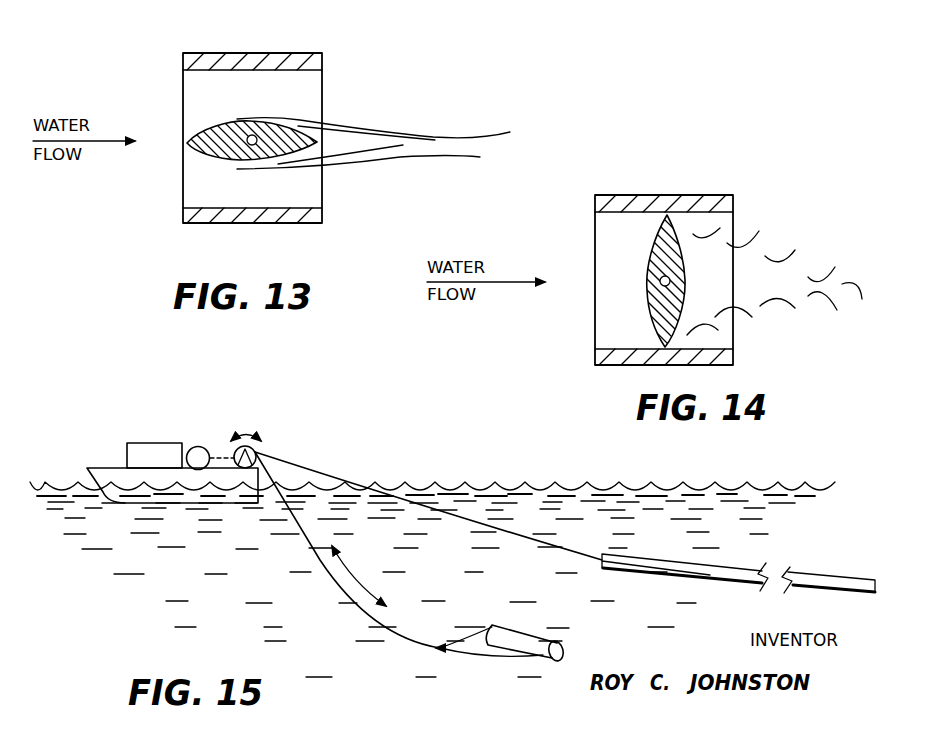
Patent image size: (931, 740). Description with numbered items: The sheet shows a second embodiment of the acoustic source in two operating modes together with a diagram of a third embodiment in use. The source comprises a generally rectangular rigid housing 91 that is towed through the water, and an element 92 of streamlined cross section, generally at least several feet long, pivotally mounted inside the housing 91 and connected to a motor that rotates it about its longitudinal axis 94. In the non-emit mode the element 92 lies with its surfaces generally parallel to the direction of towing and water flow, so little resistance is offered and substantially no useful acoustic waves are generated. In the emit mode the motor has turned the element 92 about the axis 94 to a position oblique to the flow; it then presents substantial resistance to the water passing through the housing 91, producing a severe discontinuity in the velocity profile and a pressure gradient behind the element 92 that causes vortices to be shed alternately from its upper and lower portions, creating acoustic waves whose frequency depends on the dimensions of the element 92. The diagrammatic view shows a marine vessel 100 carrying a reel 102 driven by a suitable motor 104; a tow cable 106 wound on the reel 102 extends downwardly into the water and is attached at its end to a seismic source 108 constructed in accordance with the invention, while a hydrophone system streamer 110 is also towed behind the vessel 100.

In FIG. 13, the housing 91 is at (252, 58).
In FIG. 14, the housing 91 is at (665, 205).
In FIG. 13, the element 92 is at (265, 128).
In FIG. 14, the element 92 is at (660, 235).
In FIG. 13, the longitudinal axis 94 is at (248, 143).
In FIG. 14, the longitudinal axis 94 is at (660, 278).
In FIG. 15, the marine vessel 100 is at (125, 480).
In FIG. 15, the reel 102 is at (255, 452).
In FIG. 15, the motor 104 is at (197, 447).
In FIG. 15, the tow cable 106 is at (362, 603).
In FIG. 15, the seismic source 108 is at (508, 634).
In FIG. 15, the hydrophone system streamer 110 is at (692, 565).